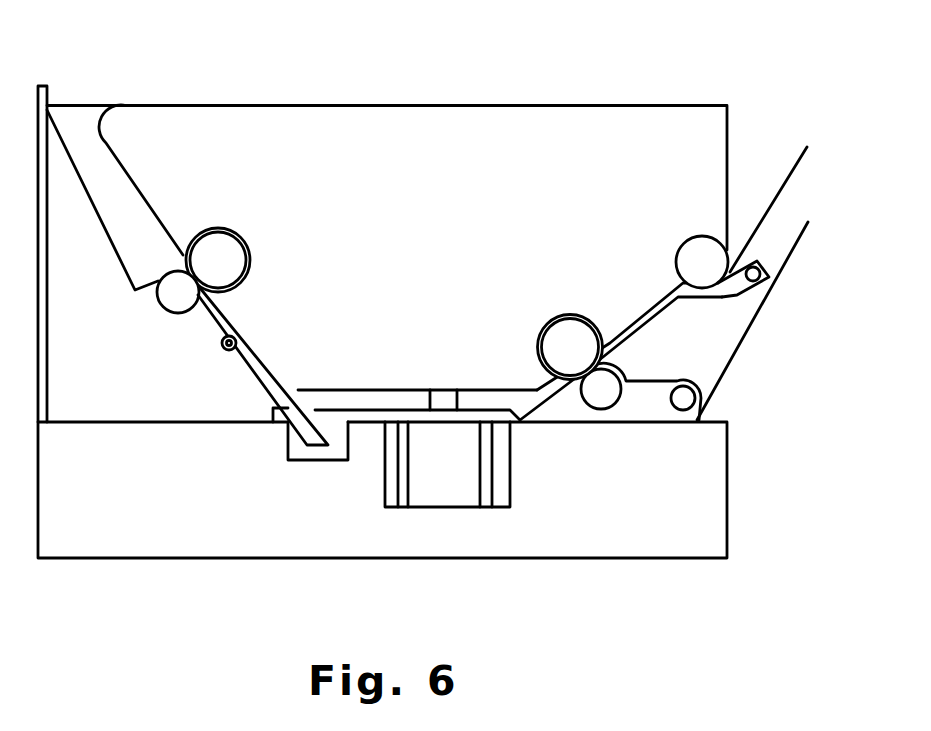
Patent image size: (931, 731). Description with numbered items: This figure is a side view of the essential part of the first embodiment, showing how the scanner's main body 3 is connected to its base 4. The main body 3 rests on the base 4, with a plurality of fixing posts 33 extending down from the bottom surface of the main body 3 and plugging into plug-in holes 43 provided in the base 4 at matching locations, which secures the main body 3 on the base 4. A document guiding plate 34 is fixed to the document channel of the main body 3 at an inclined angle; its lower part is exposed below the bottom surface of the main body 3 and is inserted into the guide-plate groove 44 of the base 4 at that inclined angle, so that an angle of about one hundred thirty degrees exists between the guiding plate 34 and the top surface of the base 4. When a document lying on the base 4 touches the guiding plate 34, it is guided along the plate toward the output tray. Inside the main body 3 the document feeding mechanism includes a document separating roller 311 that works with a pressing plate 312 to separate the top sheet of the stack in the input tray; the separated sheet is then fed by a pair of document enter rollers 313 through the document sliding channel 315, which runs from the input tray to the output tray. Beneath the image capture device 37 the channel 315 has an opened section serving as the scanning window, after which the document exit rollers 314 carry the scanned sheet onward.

The main body 3 is at (477, 92).
The base 4 is at (745, 513).
The document separating roller 311 is at (692, 252).
The pressing plate 312 is at (735, 285).
The document enter rollers 313 is at (570, 338).
The document exit rollers 314 is at (235, 247).
The document sliding channel 315 is at (298, 400).
The fixing posts 33 is at (487, 455).
The document guiding plate 34 is at (288, 422).
The image capture device 37 is at (443, 398).
The plug-in holes 43 is at (487, 507).
The guide-plate groove 44 is at (328, 460).